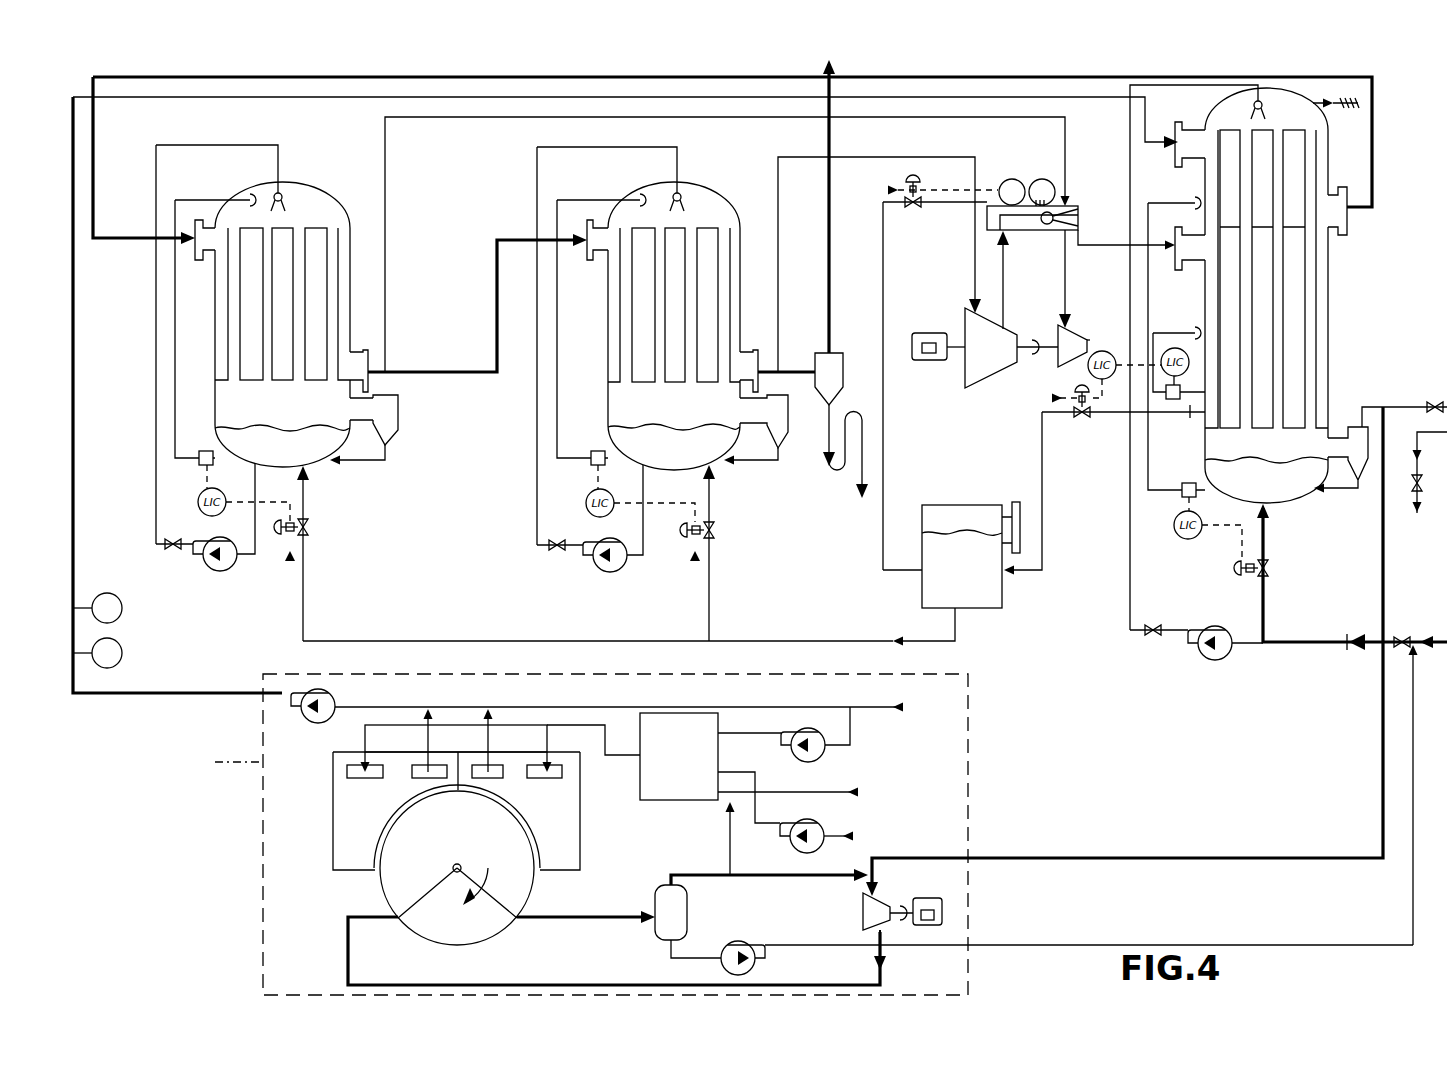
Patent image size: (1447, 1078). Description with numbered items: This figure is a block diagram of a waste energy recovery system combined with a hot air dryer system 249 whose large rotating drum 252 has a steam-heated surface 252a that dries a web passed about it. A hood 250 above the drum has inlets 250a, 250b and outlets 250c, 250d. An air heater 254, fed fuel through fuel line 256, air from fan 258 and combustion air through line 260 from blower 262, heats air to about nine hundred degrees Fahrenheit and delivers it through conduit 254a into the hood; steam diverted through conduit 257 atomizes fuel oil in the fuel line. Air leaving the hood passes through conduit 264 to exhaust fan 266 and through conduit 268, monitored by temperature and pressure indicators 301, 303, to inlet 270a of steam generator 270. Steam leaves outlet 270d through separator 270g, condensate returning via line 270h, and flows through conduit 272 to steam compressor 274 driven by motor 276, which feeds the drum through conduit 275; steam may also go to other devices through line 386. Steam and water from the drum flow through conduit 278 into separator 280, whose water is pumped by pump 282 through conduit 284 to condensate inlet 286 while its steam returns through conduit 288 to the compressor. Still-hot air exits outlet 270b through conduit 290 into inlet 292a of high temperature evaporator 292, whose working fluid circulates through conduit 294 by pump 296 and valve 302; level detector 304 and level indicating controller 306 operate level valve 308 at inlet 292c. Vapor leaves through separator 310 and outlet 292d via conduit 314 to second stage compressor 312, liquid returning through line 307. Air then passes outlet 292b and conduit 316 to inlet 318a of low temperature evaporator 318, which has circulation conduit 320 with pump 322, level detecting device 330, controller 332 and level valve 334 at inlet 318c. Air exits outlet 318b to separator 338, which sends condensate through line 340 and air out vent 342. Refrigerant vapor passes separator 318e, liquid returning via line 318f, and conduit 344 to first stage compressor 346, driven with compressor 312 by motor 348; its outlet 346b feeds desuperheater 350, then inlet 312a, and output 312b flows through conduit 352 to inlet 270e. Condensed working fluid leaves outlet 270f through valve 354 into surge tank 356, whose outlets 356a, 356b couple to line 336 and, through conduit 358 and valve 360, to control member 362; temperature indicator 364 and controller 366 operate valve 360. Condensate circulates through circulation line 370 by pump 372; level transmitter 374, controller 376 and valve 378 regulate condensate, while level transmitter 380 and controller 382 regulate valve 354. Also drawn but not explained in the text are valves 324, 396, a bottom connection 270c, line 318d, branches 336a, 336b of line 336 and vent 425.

The dryer system 249 is at (196, 899).
The hood 250 is at (333, 773).
The hood inlet 250a is at (365, 740).
The hood inlet 250b is at (456, 753).
The hood outlet 250c is at (403, 740).
The hood outlet 250d is at (464, 740).
The rotating drum 252 is at (380, 892).
The drum surface 252a is at (520, 933).
The air heater 254 is at (640, 775).
The heated air conduit 254a is at (565, 727).
The fuel line 256 is at (775, 792).
The steam conduit 257 is at (728, 821).
The fan 258 is at (790, 750).
The combustion air line 260 is at (830, 838).
The blower 262 is at (775, 821).
The conduit 264 is at (392, 707).
The exhaust fan 266 is at (335, 700).
The conduit 268 is at (180, 692).
The steam generator 270 is at (1314, 539).
The steam generator inlet 270a is at (1155, 148).
The air outlet 270b is at (1355, 212).
The bottom outlet line 270c is at (1268, 555).
The steam outlet 270d is at (1350, 425).
The working fluid inlet 270e is at (1176, 233).
The working fluid outlet 270f is at (1178, 383).
The separator 270g is at (1362, 472).
The condensate return line 270h is at (1320, 492).
The steam conduit 272 is at (1378, 688).
The steam compressor 274 is at (862, 912).
The conduit 275 is at (835, 983).
The motor 276 is at (936, 898).
The conduit 278 is at (562, 917).
The separator 280 is at (688, 893).
The pump 282 is at (722, 960).
The conduit 284 is at (1030, 945).
The condensate inlet 286 is at (1418, 640).
The steam conduit 288 is at (805, 877).
The conduit 290 is at (1068, 77).
The high temperature evaporator 292 is at (412, 486).
The evaporator inlet 292a is at (172, 248).
The air outlet 292b is at (372, 352).
The working fluid inlet 292c is at (307, 485).
The outlet opening 292d is at (388, 397).
The circulation conduit 294 is at (155, 392).
The pump 296 is at (218, 572).
The temperature indicator 301 is at (117, 597).
The valve 302 is at (165, 550).
The pressure indicator 303 is at (116, 641).
The level detector 304 is at (205, 450).
The level indicating controller 306 is at (218, 490).
The liquid return line 307 is at (395, 442).
The level valve 308 is at (283, 535).
The separator 310 is at (398, 417).
The second stage vapor compressor 312 is at (1045, 362).
The compressor inlet 312a is at (1057, 288).
The compressor output 312b is at (1087, 336).
The conduit 314 is at (462, 118).
The conduit 316 is at (495, 365).
The low temperature evaporator 318 is at (792, 496).
The inlet opening 318a is at (585, 248).
The outlet opening 318b is at (762, 370).
The refrigerant inlet 318c is at (713, 495).
The outlet line 318d is at (790, 375).
The separator 318e is at (788, 422).
The liquid return line 318f is at (766, 462).
The circulation conduit 320 is at (536, 487).
The pump 322 is at (612, 573).
The valve 324 is at (557, 552).
The level detecting device 330 is at (597, 450).
The level indicating controller 332 is at (585, 505).
The level valve 334 is at (689, 530).
The line 336 is at (800, 642).
The return line branch 336a is at (530, 641).
The return line branch 336b is at (709, 610).
The separator 338 is at (855, 378).
The condensate line 340 is at (858, 480).
The vent 342 is at (826, 72).
The conduit 344 is at (778, 212).
The first stage compressor 346 is at (982, 388).
The compressor outlet 346b is at (997, 282).
The motor 348 is at (930, 362).
The desuperheater 350 is at (1085, 207).
The conduit 352 is at (1098, 242).
The valve 354 is at (1045, 414).
The surge tank 356 is at (1005, 592).
The surge tank outlet 356a is at (958, 628).
The surge tank outlet 356b is at (905, 572).
The conduit 358 is at (881, 540).
The valve 360 is at (920, 207).
The control member 362 is at (1080, 219).
The temperature indicator 364 is at (1043, 178).
The temperature indicating controller 366 is at (1010, 178).
The circulation line 370 is at (1128, 558).
The pump 372 is at (1212, 625).
The level transmitter 374 is at (1180, 485).
The level indicating controller 376 is at (1173, 525).
The valve 378 is at (1222, 572).
The level transmitter 380 is at (1188, 333).
The level indicating controller 382 is at (1092, 411).
The steam line 386 is at (1388, 410).
The valve 396 is at (1436, 402).
The relief vent 425 is at (1342, 110).